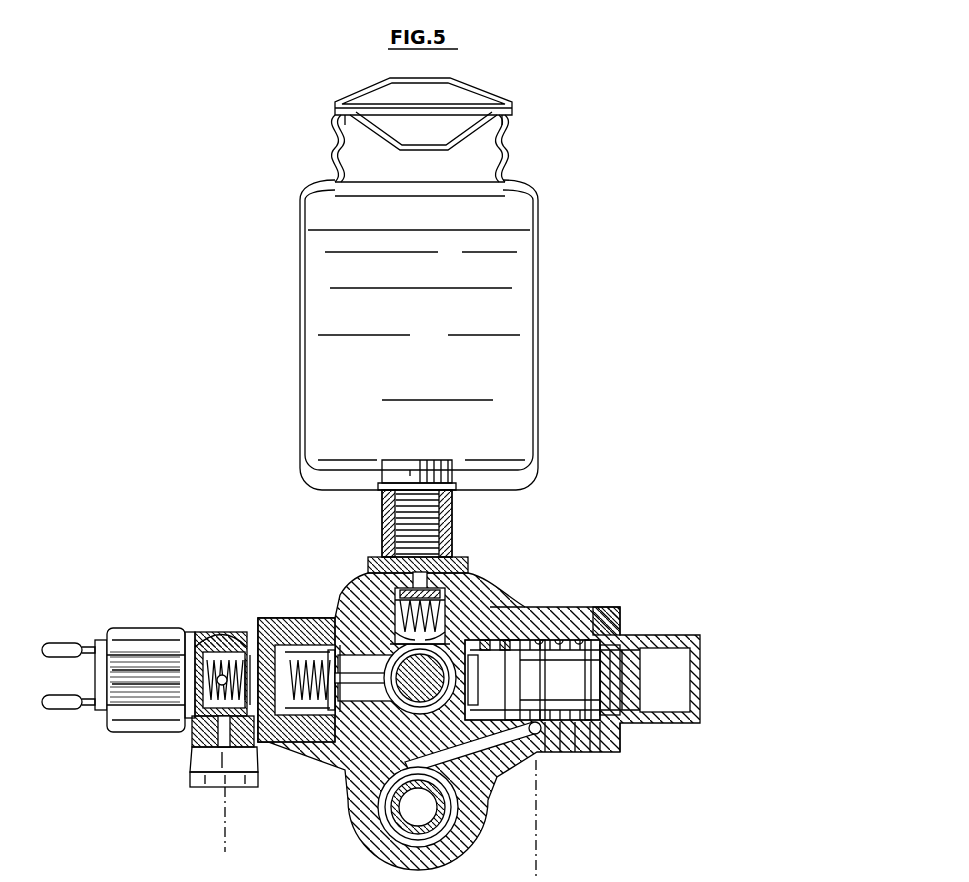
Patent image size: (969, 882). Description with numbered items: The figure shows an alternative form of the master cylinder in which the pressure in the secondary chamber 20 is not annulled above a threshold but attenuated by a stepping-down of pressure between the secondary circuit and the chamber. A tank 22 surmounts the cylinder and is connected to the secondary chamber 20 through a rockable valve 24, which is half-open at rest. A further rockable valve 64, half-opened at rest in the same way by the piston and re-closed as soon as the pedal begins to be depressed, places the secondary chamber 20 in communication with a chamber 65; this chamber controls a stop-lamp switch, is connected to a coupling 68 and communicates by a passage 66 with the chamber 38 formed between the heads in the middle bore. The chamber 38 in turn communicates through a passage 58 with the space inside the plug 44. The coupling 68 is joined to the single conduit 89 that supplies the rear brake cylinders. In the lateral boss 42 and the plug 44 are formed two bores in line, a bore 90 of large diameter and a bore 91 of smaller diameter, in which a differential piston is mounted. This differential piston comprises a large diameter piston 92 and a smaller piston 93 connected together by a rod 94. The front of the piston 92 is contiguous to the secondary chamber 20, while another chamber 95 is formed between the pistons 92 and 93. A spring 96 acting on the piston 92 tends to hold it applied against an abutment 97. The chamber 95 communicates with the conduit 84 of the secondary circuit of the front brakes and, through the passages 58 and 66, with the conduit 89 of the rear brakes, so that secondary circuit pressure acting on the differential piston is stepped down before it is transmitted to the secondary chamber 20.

The tank 22 is at (422, 320).
The valve 24 is at (378, 576).
The secondary chamber 20 is at (395, 593).
The chamber 65 is at (312, 632).
The rockable valve 64 is at (340, 648).
The passage 66 is at (352, 744).
The abutment 97 is at (487, 640).
The large diameter piston 92 is at (510, 640).
The bore of large diameter 90 is at (528, 605).
The spring 96 is at (580, 640).
The piston 93 is at (634, 650).
The bore of smaller diameter 91 is at (672, 652).
The rod 94 is at (582, 683).
The coupling 68 is at (194, 757).
The conduit 89 is at (222, 818).
The chamber 38 is at (432, 818).
The passage 58 is at (490, 755).
The lateral boss 42 is at (570, 752).
The chamber 95 is at (590, 752).
The plug 44 is at (620, 750).
The conduit 84 is at (538, 866).